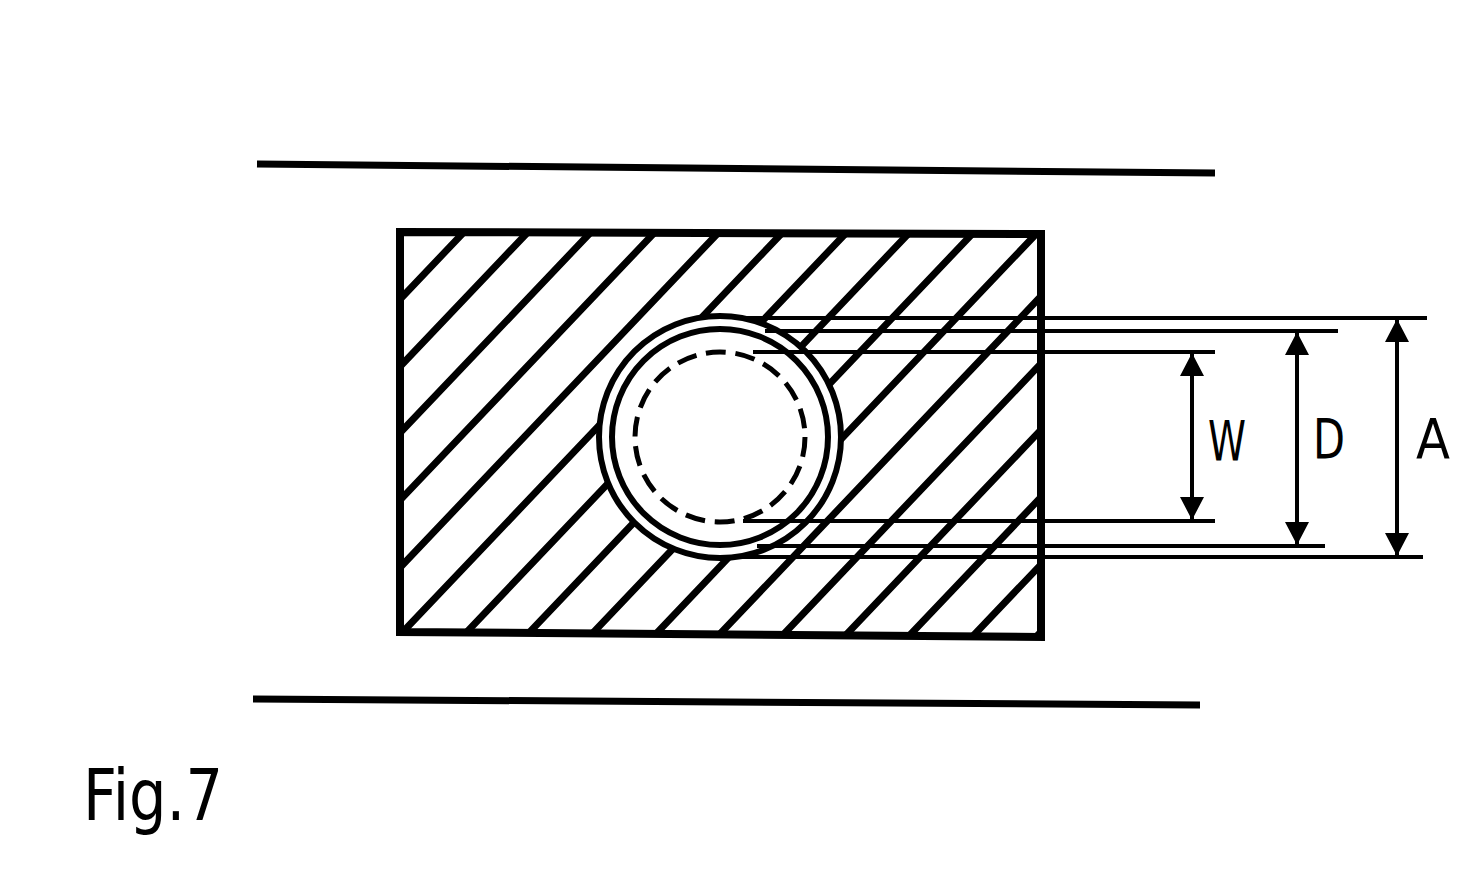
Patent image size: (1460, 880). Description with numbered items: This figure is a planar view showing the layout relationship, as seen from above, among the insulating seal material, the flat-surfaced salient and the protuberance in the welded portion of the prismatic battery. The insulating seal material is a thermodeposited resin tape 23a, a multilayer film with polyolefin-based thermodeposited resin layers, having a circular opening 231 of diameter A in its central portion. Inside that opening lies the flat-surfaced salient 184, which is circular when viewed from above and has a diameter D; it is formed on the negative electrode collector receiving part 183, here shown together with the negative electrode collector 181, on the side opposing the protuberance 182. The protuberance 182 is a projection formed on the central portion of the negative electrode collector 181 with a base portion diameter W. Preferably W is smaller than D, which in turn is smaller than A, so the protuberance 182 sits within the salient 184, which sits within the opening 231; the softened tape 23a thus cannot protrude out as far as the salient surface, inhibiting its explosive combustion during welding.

The thermodeposited resin tape 23a is at (498, 292).
The opening 231 is at (648, 345).
The protuberance 182 is at (740, 411).
The flat-surfaced salient 184 is at (708, 528).
The negative electrode collector receiving part 183 is at (1035, 666).
The negative electrode collector 181 is at (736, 486).